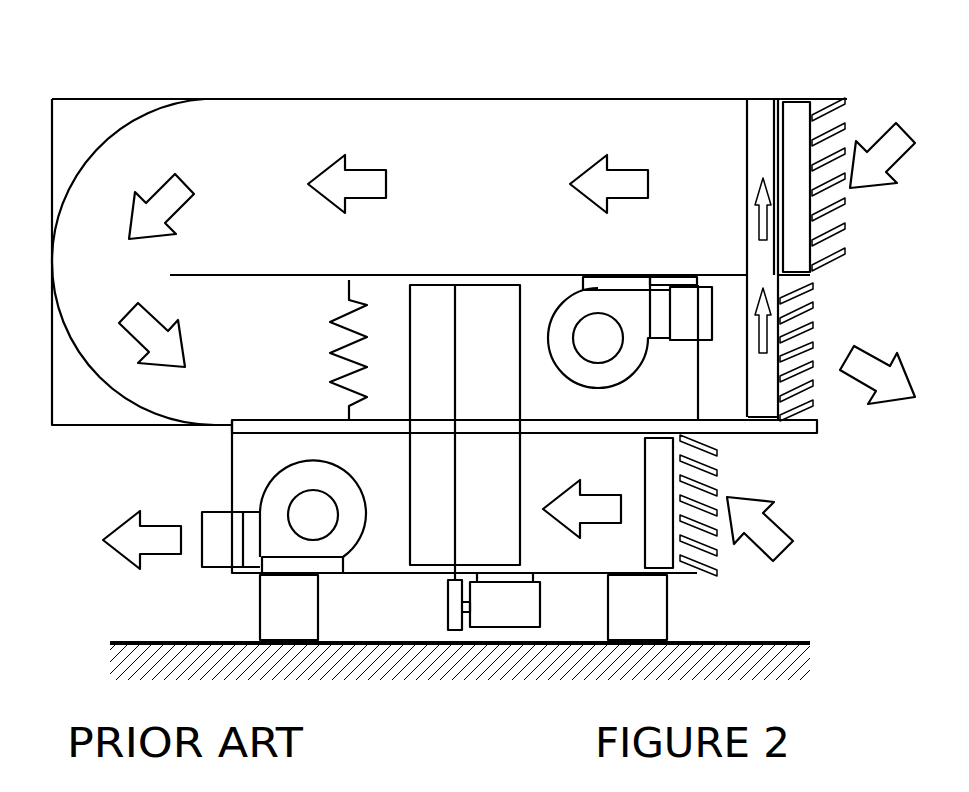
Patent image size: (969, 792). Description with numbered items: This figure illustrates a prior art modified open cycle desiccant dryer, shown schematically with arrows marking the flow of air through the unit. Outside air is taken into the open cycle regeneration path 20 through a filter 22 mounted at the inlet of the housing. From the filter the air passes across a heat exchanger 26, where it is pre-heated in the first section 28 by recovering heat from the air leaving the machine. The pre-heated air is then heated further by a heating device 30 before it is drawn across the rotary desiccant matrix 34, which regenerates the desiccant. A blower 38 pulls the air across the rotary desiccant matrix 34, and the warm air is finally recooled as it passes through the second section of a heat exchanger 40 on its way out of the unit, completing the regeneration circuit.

The open cycle regeneration path 20 is at (502, 130).
The filter 22 is at (796, 112).
The heat exchanger 26 is at (760, 257).
The first section 28 is at (760, 140).
The heating device 30 is at (330, 320).
The rotary desiccant matrix 34 is at (422, 497).
The blower 38 is at (607, 375).
The second section of a heat exchanger 40 is at (755, 387).